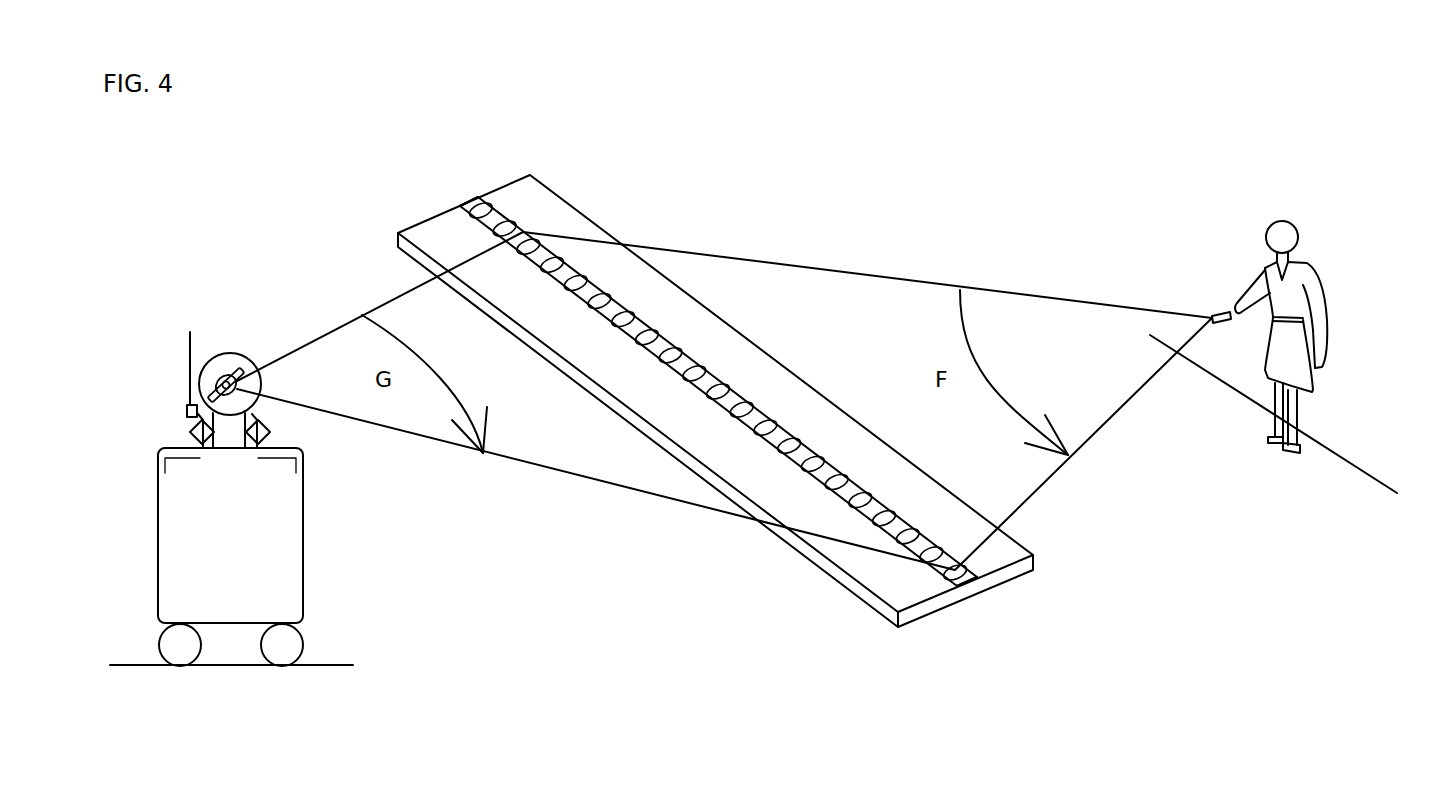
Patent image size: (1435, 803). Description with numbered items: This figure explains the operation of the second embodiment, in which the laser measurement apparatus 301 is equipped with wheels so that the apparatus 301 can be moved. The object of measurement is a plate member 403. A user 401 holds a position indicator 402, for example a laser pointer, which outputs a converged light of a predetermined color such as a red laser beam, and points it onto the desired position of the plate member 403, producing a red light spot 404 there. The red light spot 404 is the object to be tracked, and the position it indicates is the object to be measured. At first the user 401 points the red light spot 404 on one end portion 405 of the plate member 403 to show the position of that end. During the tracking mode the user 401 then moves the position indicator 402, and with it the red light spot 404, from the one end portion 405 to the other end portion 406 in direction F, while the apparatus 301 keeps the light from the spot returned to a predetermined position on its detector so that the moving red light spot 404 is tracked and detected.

The laser measurement apparatus 301 is at (303, 541).
The user 401 is at (1262, 243).
The position indicator 402 is at (1220, 308).
The plate member 403 is at (596, 226).
The red light spot 404 is at (485, 205).
The one end portion 405 is at (458, 200).
The other end portion 406 is at (978, 590).